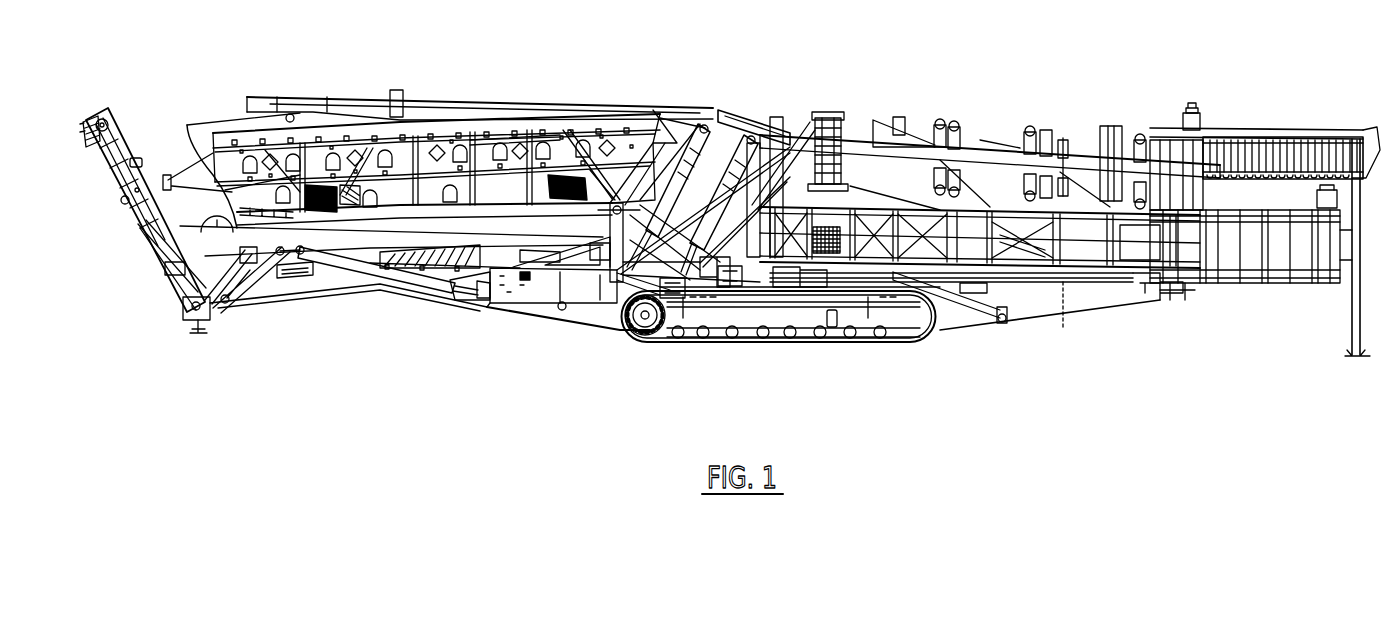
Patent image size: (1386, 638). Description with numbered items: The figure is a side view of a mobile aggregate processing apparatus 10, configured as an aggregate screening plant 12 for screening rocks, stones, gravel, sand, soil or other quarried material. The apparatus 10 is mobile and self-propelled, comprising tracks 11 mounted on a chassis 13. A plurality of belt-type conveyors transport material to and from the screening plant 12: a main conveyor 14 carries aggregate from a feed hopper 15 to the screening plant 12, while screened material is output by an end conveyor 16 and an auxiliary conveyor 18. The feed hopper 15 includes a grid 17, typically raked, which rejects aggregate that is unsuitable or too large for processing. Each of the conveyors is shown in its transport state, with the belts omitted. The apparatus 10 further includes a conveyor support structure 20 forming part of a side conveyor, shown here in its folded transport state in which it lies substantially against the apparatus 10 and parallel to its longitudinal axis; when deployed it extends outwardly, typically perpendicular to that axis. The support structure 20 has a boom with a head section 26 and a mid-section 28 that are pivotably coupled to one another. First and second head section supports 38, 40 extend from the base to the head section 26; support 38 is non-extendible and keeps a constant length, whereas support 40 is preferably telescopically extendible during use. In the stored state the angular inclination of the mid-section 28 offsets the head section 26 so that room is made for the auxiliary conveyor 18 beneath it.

The aggregate processing apparatus 10 is at (730, 199).
The tracks 11 is at (640, 338).
The aggregate screening plant 12 is at (236, 137).
The chassis 13 is at (537, 295).
The main conveyor 14 is at (597, 105).
The feed hopper 15 is at (1231, 127).
The end conveyor 16 is at (128, 137).
The grid 17 is at (1280, 155).
The auxiliary conveyor 18 is at (1133, 275).
The conveyor support structure 20 is at (838, 118).
The head section 26 is at (990, 158).
The mid-section 28 is at (703, 130).
The first head section support 38 is at (672, 298).
The second head section support 40 is at (730, 286).